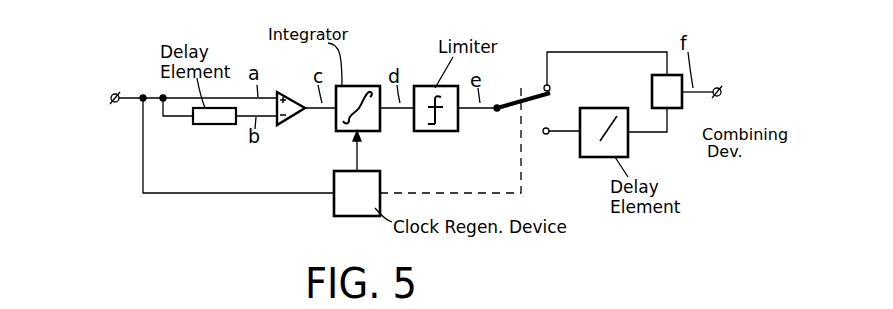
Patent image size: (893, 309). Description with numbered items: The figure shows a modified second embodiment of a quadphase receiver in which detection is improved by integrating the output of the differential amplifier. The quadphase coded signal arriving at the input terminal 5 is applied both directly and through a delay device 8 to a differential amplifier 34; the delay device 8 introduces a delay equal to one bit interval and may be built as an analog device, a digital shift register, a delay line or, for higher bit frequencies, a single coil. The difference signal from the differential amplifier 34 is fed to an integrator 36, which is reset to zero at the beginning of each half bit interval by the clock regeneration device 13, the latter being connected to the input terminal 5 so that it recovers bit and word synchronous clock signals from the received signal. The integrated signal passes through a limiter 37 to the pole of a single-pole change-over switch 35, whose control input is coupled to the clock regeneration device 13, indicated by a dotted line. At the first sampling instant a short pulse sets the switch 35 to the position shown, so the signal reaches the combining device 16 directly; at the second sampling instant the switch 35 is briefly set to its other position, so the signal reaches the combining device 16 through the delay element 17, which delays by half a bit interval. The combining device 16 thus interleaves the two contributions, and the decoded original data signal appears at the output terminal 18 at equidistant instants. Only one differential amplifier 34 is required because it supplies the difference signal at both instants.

The input terminal 5 is at (117, 104).
The delay device 8 is at (217, 125).
The differential amplifier 34 is at (297, 118).
The integrator 36 is at (372, 132).
The limiter 37 is at (440, 132).
The single-pole change-over switch 35 is at (522, 100).
The clock regeneration device 13 is at (340, 205).
The delay element 17 is at (628, 140).
The combining device 16 is at (672, 108).
The output terminal 18 is at (717, 87).